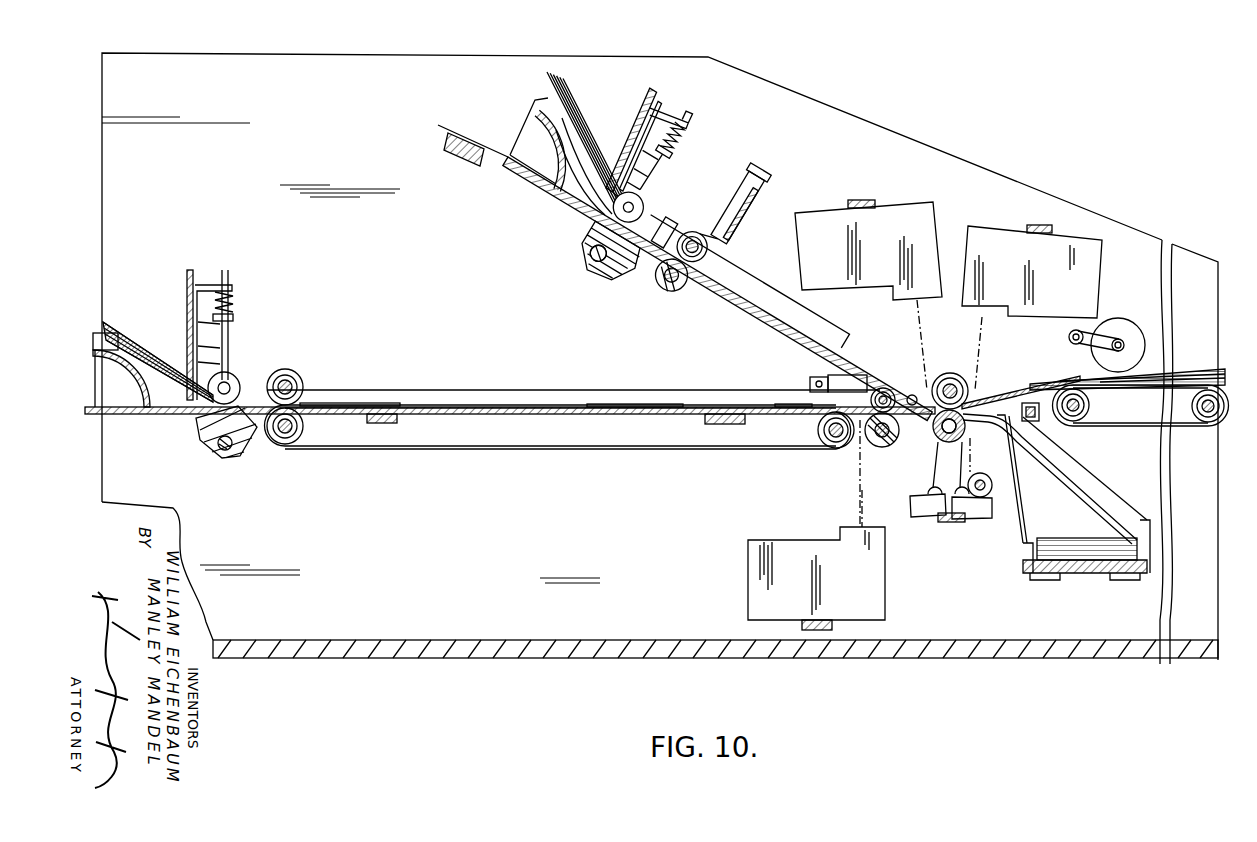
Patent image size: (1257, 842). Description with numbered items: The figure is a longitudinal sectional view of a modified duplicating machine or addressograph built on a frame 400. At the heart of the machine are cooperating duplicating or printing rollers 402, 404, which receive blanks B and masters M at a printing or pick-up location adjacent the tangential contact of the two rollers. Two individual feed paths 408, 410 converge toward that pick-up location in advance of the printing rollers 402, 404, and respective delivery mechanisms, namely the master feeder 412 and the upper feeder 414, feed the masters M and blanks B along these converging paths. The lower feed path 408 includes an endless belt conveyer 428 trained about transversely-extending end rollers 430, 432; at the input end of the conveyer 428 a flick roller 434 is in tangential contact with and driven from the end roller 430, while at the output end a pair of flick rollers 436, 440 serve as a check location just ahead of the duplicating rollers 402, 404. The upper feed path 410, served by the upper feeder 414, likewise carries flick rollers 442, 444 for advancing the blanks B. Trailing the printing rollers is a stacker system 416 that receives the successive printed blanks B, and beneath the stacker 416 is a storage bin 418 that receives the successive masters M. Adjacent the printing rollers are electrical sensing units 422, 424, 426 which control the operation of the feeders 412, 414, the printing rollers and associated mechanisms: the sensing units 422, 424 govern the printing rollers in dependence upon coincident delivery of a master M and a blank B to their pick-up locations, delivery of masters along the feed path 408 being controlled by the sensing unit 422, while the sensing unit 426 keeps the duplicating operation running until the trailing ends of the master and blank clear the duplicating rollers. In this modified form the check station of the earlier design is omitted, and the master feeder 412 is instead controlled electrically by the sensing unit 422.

The frame 400 is at (330, 62).
The printing roller 402 is at (965, 367).
The printing roller 404 is at (936, 440).
The feed path 408 is at (551, 400).
The upper feed path 410 is at (752, 292).
The master feeder 412 is at (245, 322).
The upper feeder 414 is at (676, 151).
The stacker system 416 is at (1190, 372).
The storage bin 418 is at (1010, 543).
The electrical sensing unit 422 is at (746, 578).
The electrical sensing unit 424 is at (905, 208).
The electrical sensing unit 426 is at (983, 225).
The endless belt conveyer 428 is at (528, 388).
The end roller 430 is at (296, 445).
The end roller 432 is at (818, 430).
The flick roller 434 is at (302, 373).
The flick roller 436 is at (884, 388).
The flick roller 440 is at (876, 449).
The flick roller 442 is at (674, 292).
The flick roller 444 is at (692, 234).
The blank B is at (565, 92).
The master M is at (118, 327).